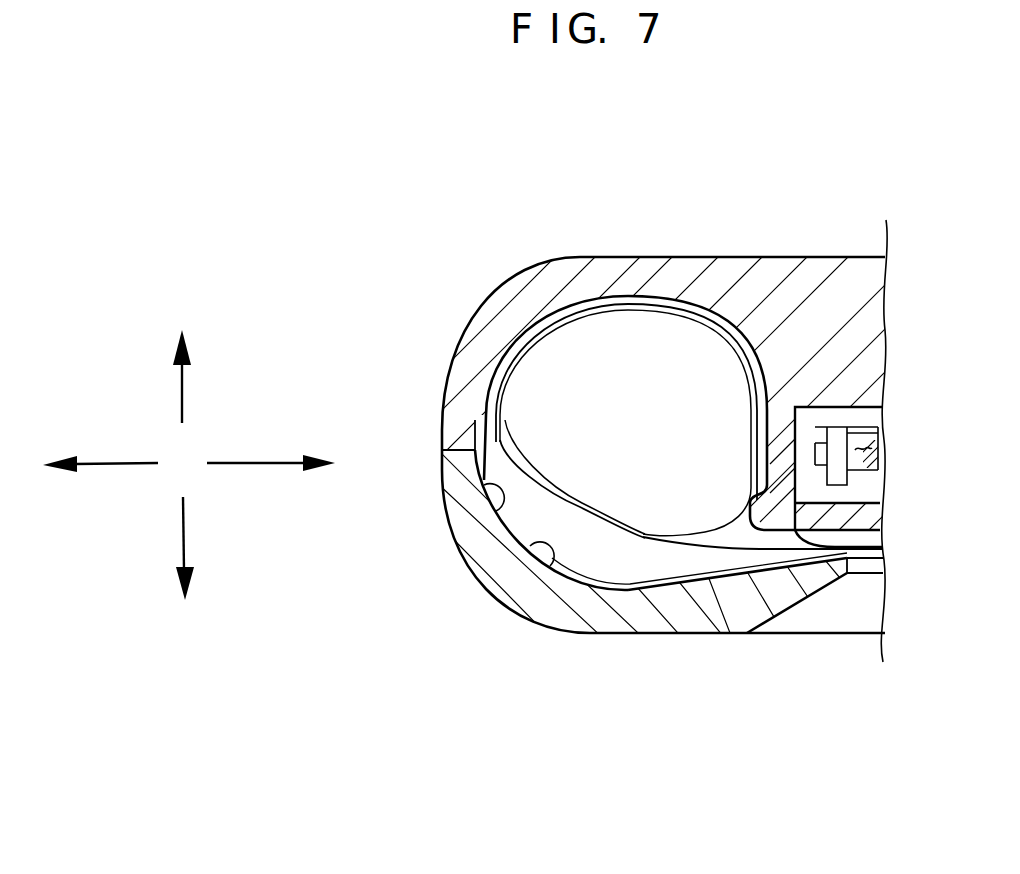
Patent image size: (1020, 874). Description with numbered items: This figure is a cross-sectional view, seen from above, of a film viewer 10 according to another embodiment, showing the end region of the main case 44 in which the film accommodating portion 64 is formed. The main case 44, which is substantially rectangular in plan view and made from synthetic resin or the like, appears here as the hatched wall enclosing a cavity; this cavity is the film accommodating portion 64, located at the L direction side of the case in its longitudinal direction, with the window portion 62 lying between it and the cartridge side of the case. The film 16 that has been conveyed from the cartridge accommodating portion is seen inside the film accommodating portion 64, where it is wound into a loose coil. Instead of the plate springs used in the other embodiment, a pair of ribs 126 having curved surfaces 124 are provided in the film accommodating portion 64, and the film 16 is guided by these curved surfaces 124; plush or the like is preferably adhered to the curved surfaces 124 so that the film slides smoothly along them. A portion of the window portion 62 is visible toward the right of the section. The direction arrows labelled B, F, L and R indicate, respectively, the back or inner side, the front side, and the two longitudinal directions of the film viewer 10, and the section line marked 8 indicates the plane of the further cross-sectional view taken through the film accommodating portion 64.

The film viewer 10 is at (540, 204).
The main case 44 is at (507, 285).
The film 16 is at (495, 381).
The film accommodating portion 64 is at (503, 482).
The curved surfaces 124 is at (558, 552).
The ribs 126 is at (705, 576).
The window portion 62 is at (862, 578).
The section line for FIG. 8 is at (623, 236).
The B direction B is at (182, 388).
The F direction F is at (185, 547).
The L direction L is at (110, 463).
The R direction R is at (273, 462).